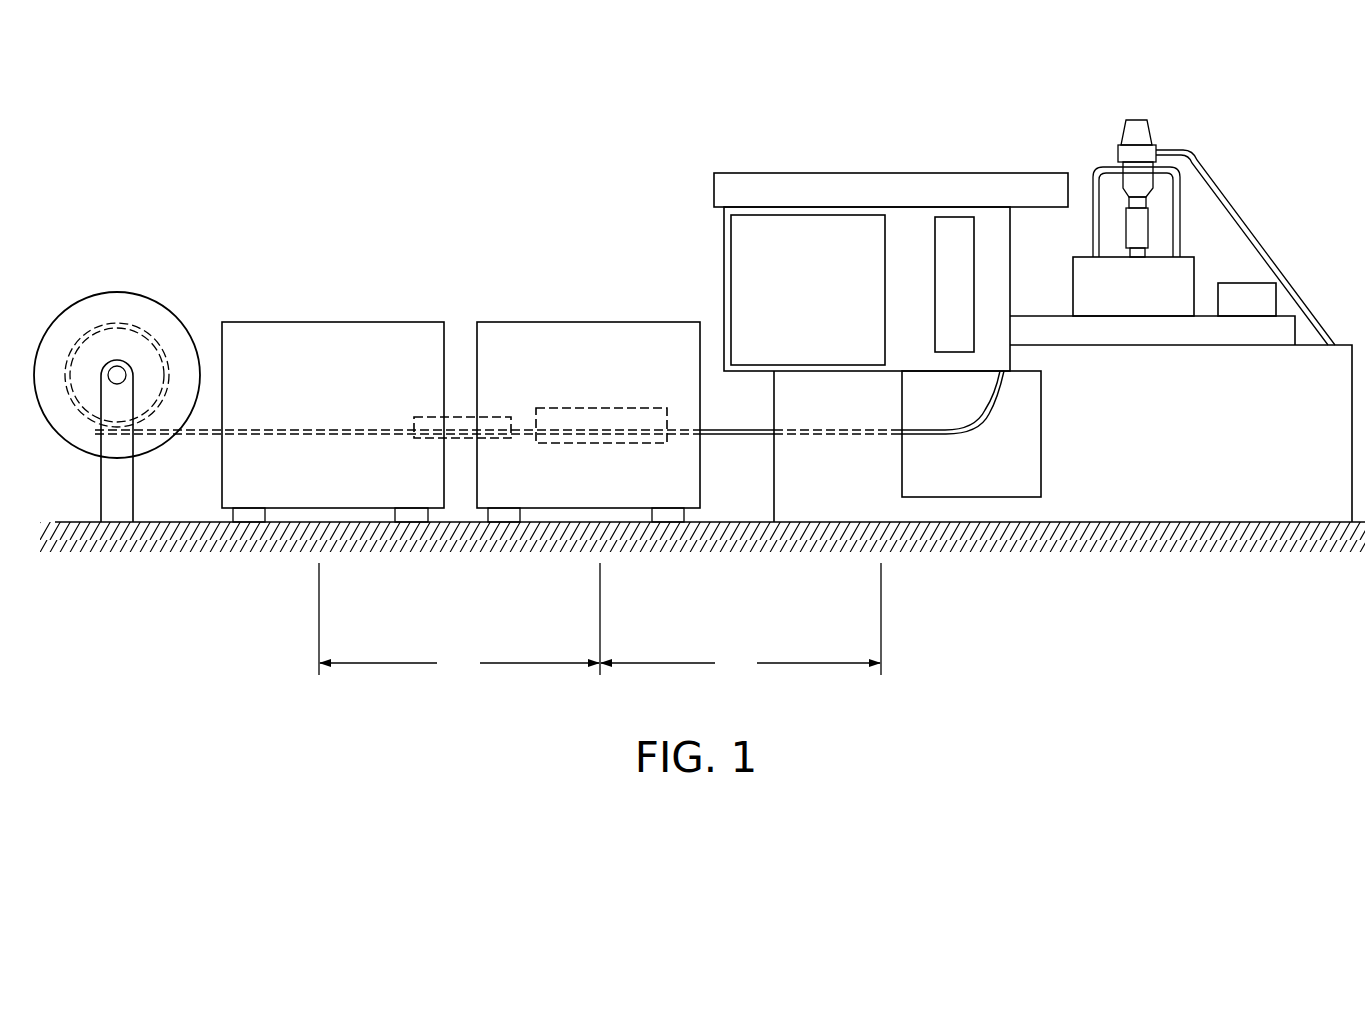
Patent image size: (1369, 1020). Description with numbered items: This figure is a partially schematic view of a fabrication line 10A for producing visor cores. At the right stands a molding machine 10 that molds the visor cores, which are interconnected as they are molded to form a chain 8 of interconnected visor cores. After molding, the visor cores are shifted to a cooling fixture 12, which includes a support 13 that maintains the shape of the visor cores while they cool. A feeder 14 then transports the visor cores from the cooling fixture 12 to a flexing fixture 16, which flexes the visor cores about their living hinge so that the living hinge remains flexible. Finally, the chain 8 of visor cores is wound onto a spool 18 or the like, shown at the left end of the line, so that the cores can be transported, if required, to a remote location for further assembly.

The chain 8 is at (732, 435).
The molding machine 10 is at (853, 173).
The fabrication line 10A is at (545, 210).
The cooling fixture 12 is at (617, 317).
The support 13 is at (572, 437).
The feeder 14 is at (458, 415).
The flexing fixture 16 is at (313, 315).
The spool 18 is at (140, 288).